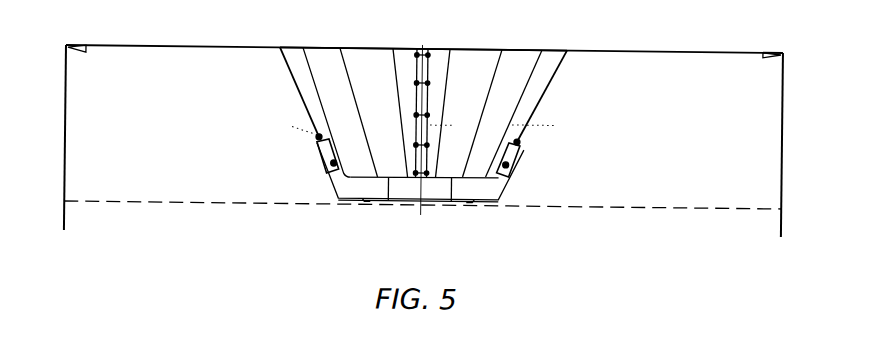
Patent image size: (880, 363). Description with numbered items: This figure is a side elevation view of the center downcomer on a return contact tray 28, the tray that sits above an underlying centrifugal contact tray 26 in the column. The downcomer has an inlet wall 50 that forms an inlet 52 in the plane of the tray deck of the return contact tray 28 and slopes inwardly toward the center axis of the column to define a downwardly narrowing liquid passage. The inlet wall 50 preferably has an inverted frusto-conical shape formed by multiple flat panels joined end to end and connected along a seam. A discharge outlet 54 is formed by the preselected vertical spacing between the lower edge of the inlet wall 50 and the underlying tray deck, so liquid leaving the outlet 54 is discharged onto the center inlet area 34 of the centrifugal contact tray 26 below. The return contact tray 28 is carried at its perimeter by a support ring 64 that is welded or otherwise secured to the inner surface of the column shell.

The support ring 64 is at (72, 46).
The inlet 52 is at (524, 43).
The inlet wall 50 is at (515, 85).
The return contact tray 28 is at (655, 41).
The discharge outlet 54 is at (477, 180).
The center inlet area 34 is at (473, 199).
The centrifugal contact tray 26 is at (623, 201).